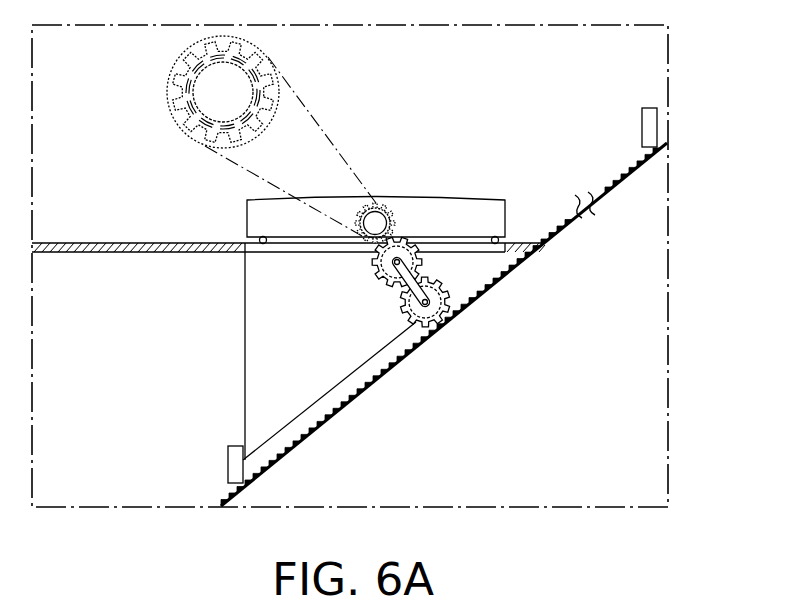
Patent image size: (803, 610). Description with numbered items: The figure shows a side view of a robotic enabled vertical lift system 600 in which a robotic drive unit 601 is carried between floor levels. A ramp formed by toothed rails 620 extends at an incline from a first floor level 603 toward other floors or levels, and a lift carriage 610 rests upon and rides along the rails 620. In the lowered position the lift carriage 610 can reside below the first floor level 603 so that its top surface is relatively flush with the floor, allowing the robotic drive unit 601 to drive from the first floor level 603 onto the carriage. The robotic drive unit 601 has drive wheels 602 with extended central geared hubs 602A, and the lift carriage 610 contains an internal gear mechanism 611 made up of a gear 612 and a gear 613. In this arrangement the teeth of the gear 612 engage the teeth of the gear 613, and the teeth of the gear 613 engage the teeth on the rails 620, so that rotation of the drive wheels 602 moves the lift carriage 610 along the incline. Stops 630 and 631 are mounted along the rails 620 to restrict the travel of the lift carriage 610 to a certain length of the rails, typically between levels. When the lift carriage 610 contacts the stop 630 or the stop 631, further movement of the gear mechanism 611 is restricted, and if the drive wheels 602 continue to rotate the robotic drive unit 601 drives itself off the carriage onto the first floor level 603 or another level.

The robotic enabled vertical lift system 600 is at (98, 128).
The robotic drive unit 601 is at (427, 221).
The drive wheels 602 is at (382, 206).
The extended central geared hubs 602A is at (197, 50).
The first floor level 603 is at (70, 243).
The lift carriage 610 is at (270, 318).
The internal gear mechanism 611 is at (371, 309).
The gear 612 is at (373, 262).
The gear 613 is at (408, 314).
The rails 620 is at (617, 187).
The stop 630 is at (657, 122).
The stop 631 is at (228, 462).